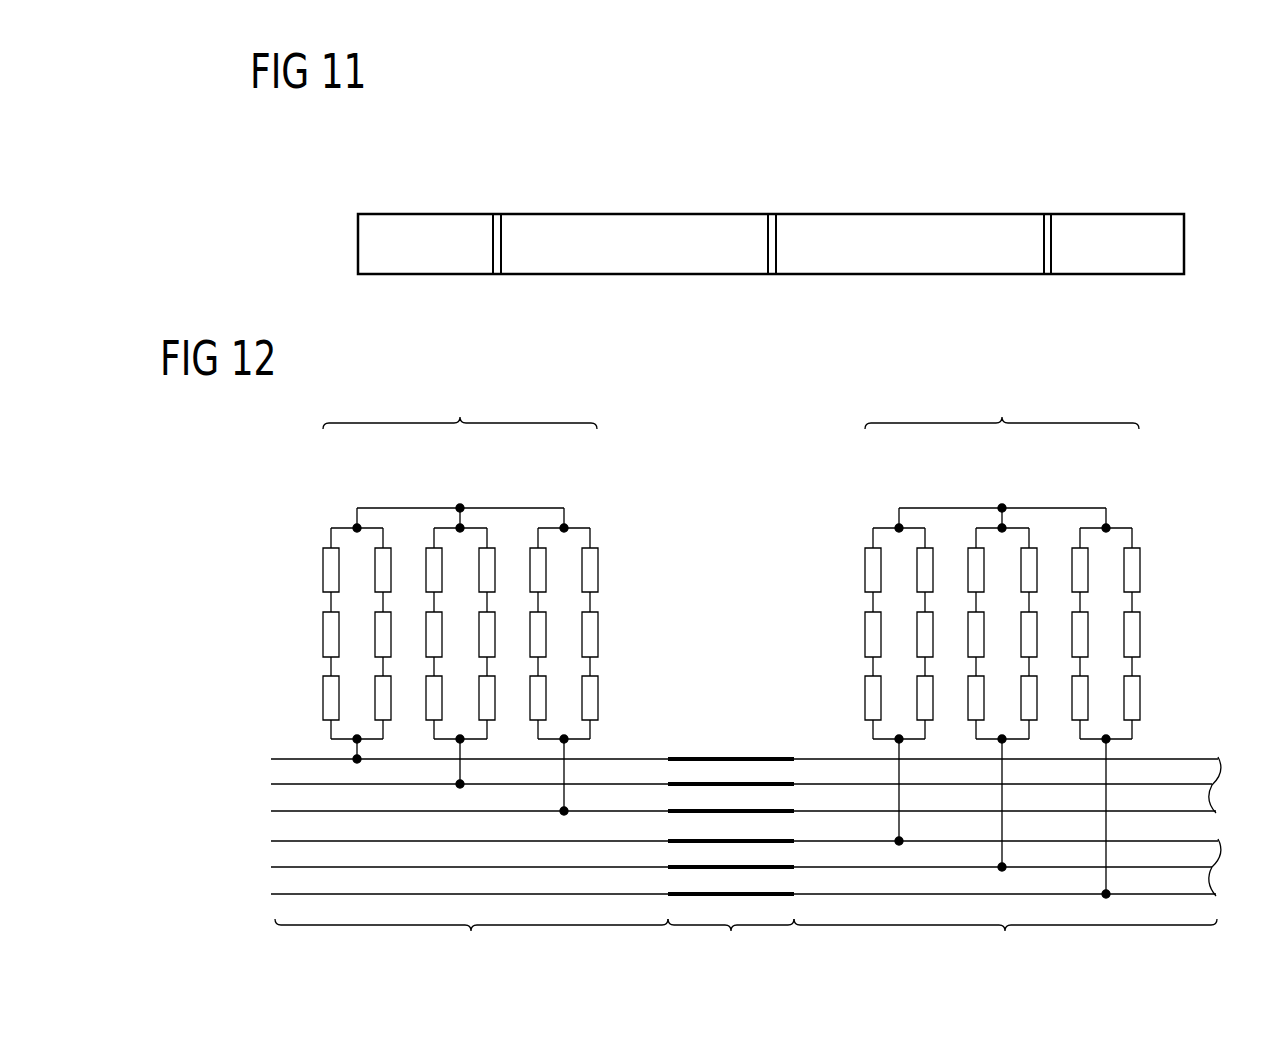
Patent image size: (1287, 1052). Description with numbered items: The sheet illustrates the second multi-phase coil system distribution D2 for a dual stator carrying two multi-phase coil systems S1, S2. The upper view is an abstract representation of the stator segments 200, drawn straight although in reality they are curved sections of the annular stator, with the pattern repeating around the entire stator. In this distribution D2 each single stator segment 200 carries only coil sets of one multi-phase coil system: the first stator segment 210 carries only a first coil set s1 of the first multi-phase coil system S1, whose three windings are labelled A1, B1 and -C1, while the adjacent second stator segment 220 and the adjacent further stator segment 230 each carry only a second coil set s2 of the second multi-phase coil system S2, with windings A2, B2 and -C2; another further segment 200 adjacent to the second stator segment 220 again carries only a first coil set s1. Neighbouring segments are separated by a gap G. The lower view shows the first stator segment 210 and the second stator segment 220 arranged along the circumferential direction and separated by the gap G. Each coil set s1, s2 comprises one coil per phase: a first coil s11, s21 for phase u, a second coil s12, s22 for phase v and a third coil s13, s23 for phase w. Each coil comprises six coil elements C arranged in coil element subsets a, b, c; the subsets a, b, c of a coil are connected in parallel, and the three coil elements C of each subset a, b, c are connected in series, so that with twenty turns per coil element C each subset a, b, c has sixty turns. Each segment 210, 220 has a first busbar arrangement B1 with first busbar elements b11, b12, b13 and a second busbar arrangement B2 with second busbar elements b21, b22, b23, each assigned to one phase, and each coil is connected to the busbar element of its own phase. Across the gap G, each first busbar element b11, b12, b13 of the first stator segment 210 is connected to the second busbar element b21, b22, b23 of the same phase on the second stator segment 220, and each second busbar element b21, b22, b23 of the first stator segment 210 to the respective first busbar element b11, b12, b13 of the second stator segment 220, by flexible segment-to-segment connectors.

In FIG. 11, the stator segment 200 is at (1163, 170).
In FIG. 11, the first stator segment 210 is at (641, 170).
In FIG. 12, the first stator segment 210 is at (471, 679).
In FIG. 11, the second stator segment 220 is at (910, 170).
In FIG. 12, the second stator segment 220 is at (1005, 679).
In FIG. 11, the further stator segment 230 is at (396, 170).
In FIG. 11, the gap G is at (502, 198).
In FIG. 12, the gap G is at (731, 866).
In FIG. 11, the second multi-phase coil system distribution D2 is at (330, 236).
In FIG. 12, the second multi-phase coil system distribution D2 is at (714, 531).
In FIG. 11, the first multi-phase coil system S1 is at (842, 194).
In FIG. 11, the second multi-phase coil system S2 is at (699, 194).
In FIG. 12, the first coil set s1 is at (460, 600).
In FIG. 12, the second coil set s2 is at (1002, 641).
In FIG. 12, the first coil s11 is at (361, 615).
In FIG. 12, the second coil s12 is at (464, 628).
In FIG. 12, the third coil s13 is at (568, 641).
In FIG. 12, the first coil s21 is at (903, 656).
In FIG. 12, the second coil s22 is at (1006, 669).
In FIG. 12, the third coil s23 is at (1110, 683).
In FIG. 12, the coil element subset a is at (326, 516).
In FIG. 12, the coil element subset b is at (429, 516).
In FIG. 12, the coil element subset c is at (533, 516).
In FIG. 12, the coil element C is at (310, 568).
In FIG. 12, the first busbar phase element b11 is at (258, 759).
In FIG. 12, the second busbar phase element b12 is at (258, 784).
In FIG. 12, the third busbar phase element b13 is at (258, 811).
In FIG. 12, the first busbar phase element b21 is at (258, 841).
In FIG. 12, the second busbar phase element b22 is at (258, 867).
In FIG. 12, the third busbar phase element b23 is at (258, 894).
In FIG. 12, the first busbar arrangement B1 is at (1230, 759).
In FIG. 12, the second busbar arrangement B2 is at (1230, 841).